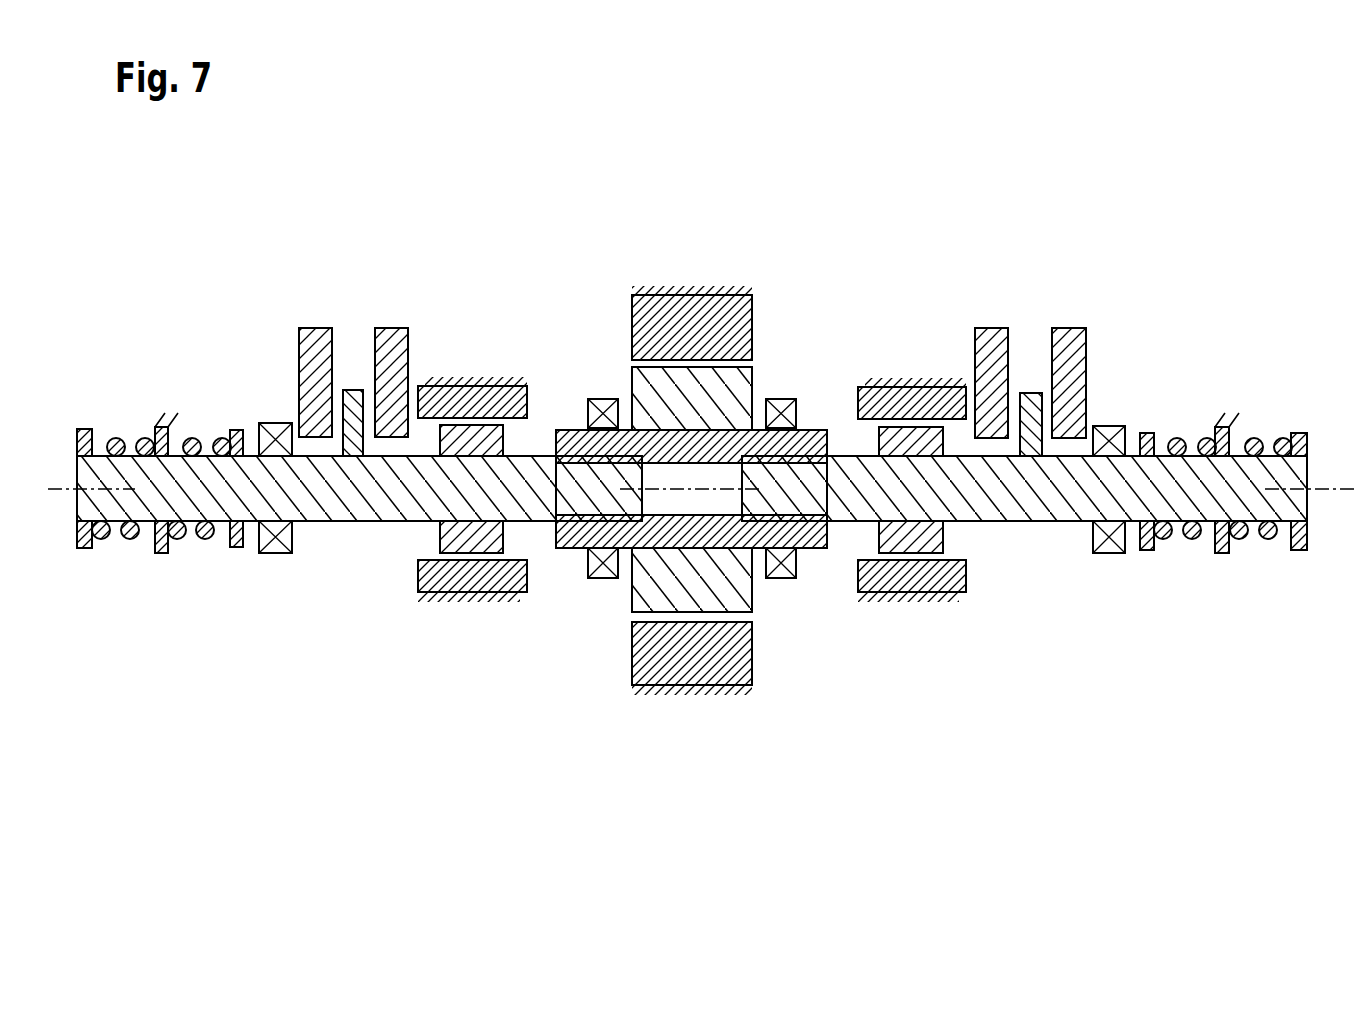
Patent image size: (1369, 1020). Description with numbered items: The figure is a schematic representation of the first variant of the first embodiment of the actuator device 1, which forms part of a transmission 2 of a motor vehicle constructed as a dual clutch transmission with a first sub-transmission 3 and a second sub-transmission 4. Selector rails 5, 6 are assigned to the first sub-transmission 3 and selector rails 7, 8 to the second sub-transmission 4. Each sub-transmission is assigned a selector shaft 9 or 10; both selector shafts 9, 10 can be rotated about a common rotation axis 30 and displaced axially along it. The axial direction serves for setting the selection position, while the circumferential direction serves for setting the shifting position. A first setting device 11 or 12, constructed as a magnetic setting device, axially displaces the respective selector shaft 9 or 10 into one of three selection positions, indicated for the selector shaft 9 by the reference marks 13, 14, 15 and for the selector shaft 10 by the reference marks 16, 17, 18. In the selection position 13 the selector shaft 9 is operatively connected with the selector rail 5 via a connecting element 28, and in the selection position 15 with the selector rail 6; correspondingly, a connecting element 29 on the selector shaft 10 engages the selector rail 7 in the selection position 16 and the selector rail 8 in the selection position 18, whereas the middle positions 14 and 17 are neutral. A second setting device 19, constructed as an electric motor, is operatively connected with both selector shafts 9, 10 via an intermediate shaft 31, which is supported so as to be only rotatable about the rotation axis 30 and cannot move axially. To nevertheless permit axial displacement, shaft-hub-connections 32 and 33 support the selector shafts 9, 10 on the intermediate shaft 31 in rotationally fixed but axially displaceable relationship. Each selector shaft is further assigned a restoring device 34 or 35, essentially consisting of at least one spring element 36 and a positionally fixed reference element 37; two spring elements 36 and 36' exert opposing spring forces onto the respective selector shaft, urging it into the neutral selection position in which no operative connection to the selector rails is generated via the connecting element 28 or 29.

The actuator device 1 is at (853, 161).
The transmission 2 is at (928, 202).
The first sub-transmission 3 is at (333, 246).
The second sub-transmission 4 is at (1051, 248).
The selector rail 5 is at (303, 342).
The selector rail 6 is at (395, 343).
The selector rail 7 is at (985, 342).
The selector rail 8 is at (1075, 342).
The selector shaft 9 is at (357, 508).
The selector shaft 10 is at (1032, 508).
The first setting device 11 is at (470, 630).
The first setting device 12 is at (908, 630).
The selection position 13 is at (330, 292).
The selection position 14 is at (368, 310).
The selection position 15 is at (408, 292).
The selection position 16 is at (1005, 293).
The selection position 17 is at (1043, 310).
The selection position 18 is at (1083, 293).
The second setting device 19 is at (695, 722).
The connecting element 28 is at (353, 392).
The connecting element 29 is at (1030, 395).
The rotation axis 30 is at (1333, 490).
The intermediate shaft 31 is at (568, 540).
The shaft-hub-connection 32 is at (555, 371).
The shaft-hub-connection 33 is at (827, 371).
The restoring device 34 is at (193, 371).
The restoring device 35 is at (1189, 371).
The spring element 36 is at (654, 526).
The spring element 36' is at (730, 526).
The positionally fixed reference element 37 is at (160, 553).